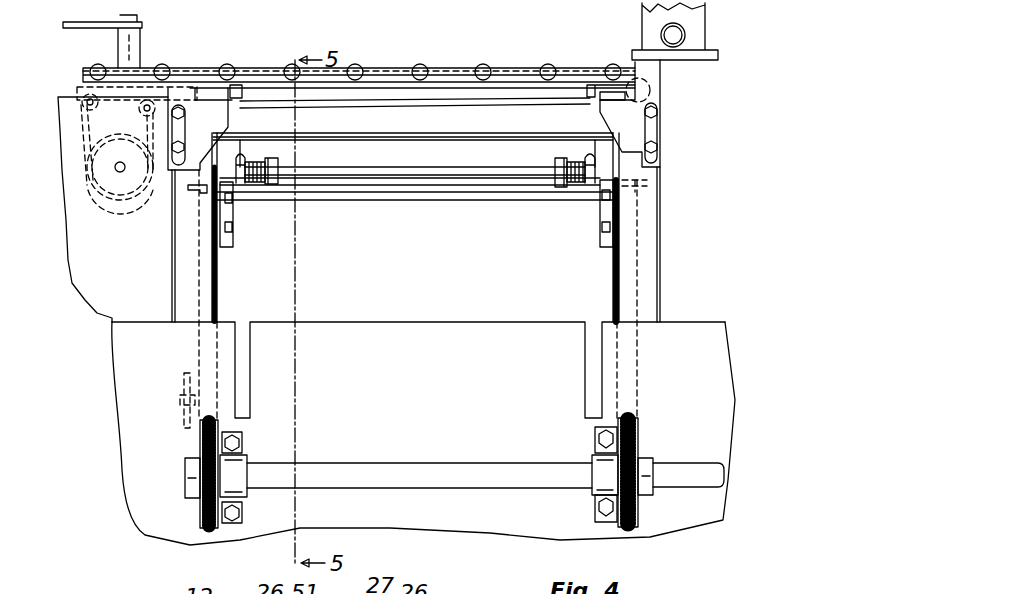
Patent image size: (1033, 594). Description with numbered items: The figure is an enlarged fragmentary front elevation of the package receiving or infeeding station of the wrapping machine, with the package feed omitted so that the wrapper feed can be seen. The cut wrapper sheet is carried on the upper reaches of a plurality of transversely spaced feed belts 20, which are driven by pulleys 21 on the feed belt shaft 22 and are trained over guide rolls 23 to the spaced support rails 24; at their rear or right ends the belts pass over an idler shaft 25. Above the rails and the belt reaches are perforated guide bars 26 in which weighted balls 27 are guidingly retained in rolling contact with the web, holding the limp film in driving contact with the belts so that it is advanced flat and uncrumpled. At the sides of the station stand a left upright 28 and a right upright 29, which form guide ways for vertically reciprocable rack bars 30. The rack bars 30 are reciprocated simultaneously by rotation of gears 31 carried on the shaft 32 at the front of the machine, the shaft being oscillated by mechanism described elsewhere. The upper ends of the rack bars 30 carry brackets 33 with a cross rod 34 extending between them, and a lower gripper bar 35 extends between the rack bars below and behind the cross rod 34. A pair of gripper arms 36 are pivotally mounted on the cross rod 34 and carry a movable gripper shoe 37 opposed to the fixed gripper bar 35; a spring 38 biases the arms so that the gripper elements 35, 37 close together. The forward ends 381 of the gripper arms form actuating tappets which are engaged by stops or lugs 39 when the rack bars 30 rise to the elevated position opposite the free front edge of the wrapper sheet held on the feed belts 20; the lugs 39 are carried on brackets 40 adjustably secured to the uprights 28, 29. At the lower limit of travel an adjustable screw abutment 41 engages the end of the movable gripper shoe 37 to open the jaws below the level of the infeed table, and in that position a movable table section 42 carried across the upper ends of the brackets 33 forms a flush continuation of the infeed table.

The feed belts 20 is at (382, 103).
The pulleys 21 is at (112, 185).
The feed belt shaft 22 is at (122, 172).
The guide rolls 23 is at (78, 160).
The support rails 24 is at (511, 90).
The idler shaft 25 is at (652, 88).
The perforated guide bars 26 is at (382, 70).
The weighted balls 27 is at (423, 66).
The left upright 28 is at (180, 303).
The right upright 29 is at (655, 288).
The rack bars 30 is at (613, 298).
The gears 31 is at (637, 431).
The shaft 32 is at (468, 480).
The brackets 33 is at (603, 233).
The cross rod 34 is at (437, 174).
The lower gripper bar 35 is at (485, 194).
The gripper arms 36 is at (590, 153).
The movable gripper shoe 37 is at (368, 187).
The spring 38 is at (263, 182).
The forward ends 381 is at (583, 160).
The lugs 39 is at (590, 85).
The brackets 40 is at (632, 128).
The adjustable screw abutment 41 is at (197, 398).
The movable table section 42 is at (495, 137).